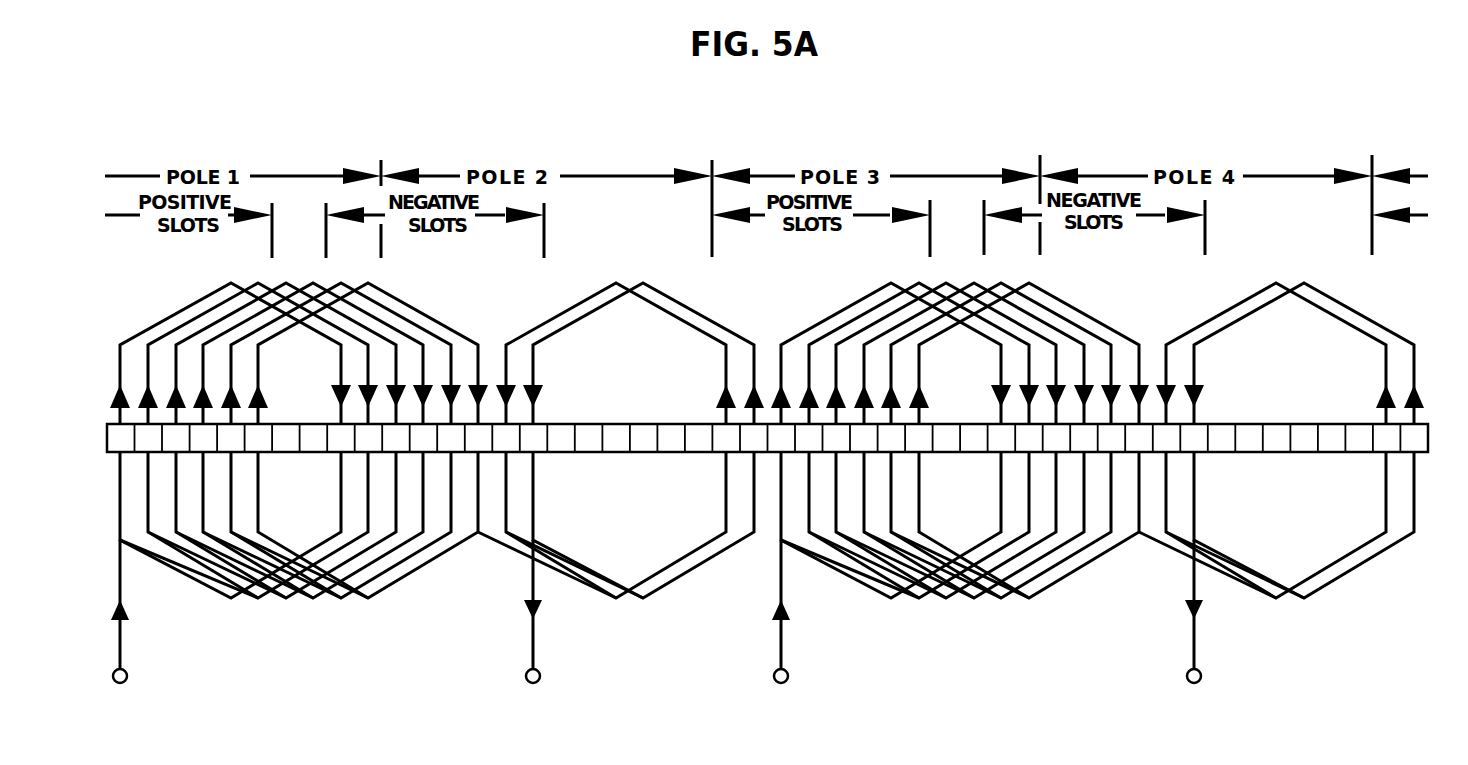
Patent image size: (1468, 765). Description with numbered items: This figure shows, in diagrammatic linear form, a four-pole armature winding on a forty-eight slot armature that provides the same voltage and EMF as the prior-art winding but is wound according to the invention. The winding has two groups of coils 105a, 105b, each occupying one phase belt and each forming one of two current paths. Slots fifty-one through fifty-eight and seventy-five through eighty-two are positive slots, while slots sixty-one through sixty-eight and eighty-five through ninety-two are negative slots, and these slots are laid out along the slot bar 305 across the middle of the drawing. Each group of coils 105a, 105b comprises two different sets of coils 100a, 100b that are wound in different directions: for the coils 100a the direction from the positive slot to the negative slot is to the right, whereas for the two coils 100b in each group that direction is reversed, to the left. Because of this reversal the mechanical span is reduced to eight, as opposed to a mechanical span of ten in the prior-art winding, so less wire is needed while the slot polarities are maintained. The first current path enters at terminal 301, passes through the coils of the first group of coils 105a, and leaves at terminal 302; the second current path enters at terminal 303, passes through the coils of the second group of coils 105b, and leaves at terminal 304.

The coils wound in the first direction 100a is at (657, 430).
The reversed-direction coils 100b is at (675, 312).
The first group of coils 105a is at (452, 322).
The second group of coils 105b is at (1107, 318).
The first current path terminal 301 is at (134, 661).
The first current path end terminal 302 is at (543, 660).
The second current path terminal 303 is at (791, 660).
The second current path end terminal 304 is at (1203, 660).
The slot bar / armature slots 305 is at (1232, 418).